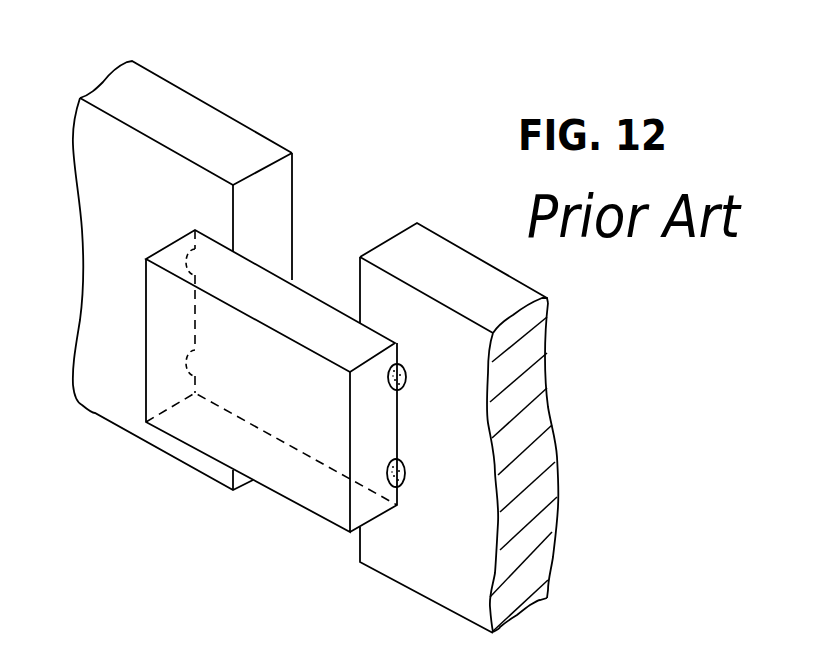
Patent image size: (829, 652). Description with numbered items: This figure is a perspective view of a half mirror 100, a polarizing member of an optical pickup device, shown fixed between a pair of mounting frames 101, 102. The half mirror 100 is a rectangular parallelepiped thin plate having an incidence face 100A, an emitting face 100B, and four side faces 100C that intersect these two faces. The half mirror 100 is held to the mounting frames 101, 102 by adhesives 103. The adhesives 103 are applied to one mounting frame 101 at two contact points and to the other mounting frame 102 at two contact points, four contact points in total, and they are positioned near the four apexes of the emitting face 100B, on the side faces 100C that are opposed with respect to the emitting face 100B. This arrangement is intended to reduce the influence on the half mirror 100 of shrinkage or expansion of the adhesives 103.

The half mirror 100 is at (271, 405).
The incidence face 100A is at (288, 480).
The emitting face 100B is at (340, 268).
The side faces 100C is at (253, 282).
The mounting frame 101 is at (472, 288).
The mounting frame 102 is at (155, 107).
The adhesives 103 is at (407, 380).